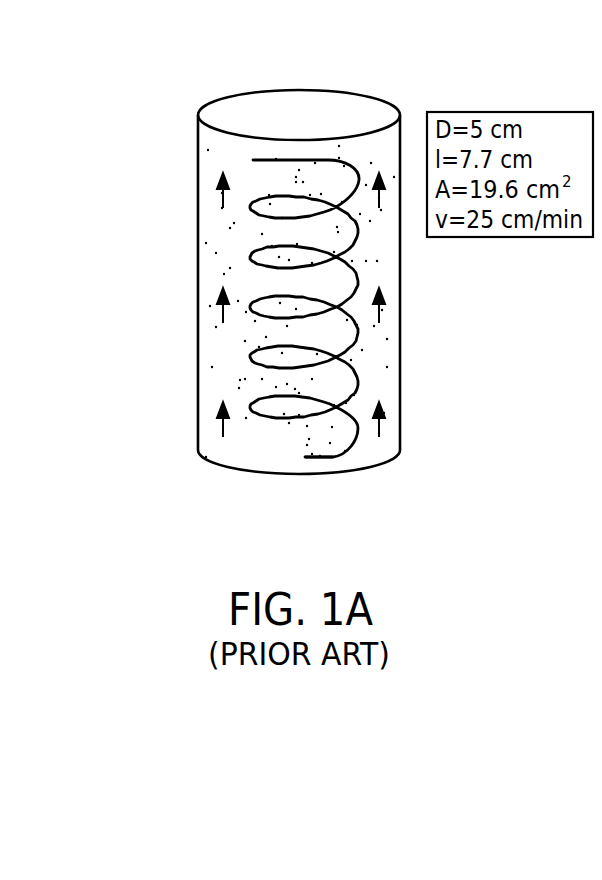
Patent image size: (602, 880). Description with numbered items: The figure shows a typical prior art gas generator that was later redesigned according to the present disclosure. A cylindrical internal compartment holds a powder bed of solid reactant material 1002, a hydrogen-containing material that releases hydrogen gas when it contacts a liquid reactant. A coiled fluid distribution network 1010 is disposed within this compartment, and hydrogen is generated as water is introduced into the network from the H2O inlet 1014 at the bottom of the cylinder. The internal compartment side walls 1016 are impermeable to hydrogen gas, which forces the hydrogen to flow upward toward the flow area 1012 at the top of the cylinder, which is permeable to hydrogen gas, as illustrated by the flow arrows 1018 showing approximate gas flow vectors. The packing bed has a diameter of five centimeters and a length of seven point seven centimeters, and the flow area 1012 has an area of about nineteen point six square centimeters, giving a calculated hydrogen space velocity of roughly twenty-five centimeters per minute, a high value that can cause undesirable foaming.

The solid reactant material 1002 is at (205, 250).
The fluid distribution network 1010 is at (358, 383).
The flow area 1012 is at (323, 108).
The H2O inlet 1014 is at (313, 457).
The internal compartment side walls 1016 is at (198, 170).
The flow arrows 1018 is at (223, 312).